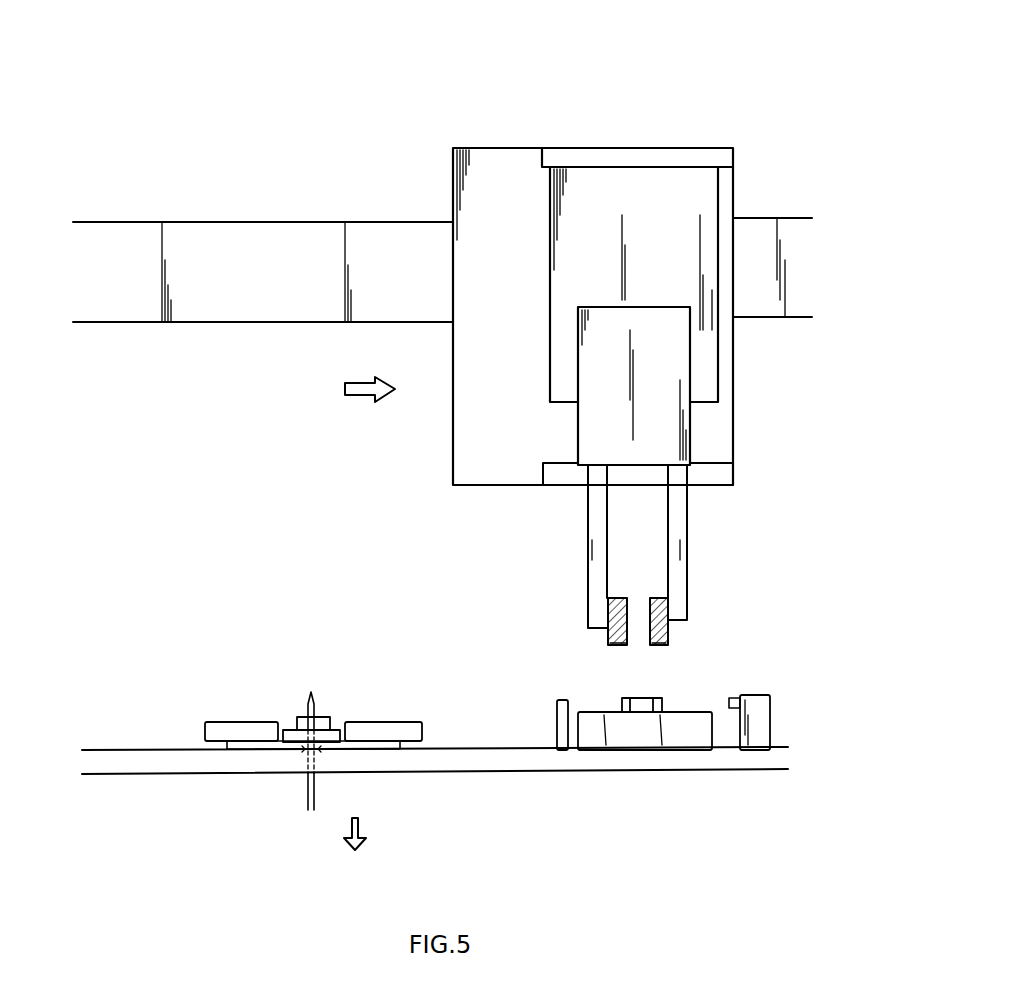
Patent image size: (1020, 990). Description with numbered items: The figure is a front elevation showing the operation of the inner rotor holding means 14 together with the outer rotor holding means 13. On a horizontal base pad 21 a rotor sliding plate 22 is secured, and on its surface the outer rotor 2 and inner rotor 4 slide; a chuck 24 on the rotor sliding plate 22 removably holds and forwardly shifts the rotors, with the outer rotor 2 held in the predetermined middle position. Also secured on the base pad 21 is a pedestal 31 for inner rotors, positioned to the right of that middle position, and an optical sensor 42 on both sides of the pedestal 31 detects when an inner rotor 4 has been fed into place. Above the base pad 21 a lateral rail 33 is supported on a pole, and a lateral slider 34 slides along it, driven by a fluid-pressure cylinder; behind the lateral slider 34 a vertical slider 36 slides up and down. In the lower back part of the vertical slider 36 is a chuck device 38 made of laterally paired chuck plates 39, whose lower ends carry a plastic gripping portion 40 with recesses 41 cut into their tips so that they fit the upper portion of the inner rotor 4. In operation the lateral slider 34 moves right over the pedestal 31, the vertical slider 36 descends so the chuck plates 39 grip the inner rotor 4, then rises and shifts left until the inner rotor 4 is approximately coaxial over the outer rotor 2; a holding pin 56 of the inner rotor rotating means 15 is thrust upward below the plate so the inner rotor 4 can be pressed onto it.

The outer rotor 2 is at (337, 733).
The inner rotor 4 is at (297, 720).
The outer rotor holding means 13 is at (253, 688).
The inner rotor holding means 14 is at (725, 606).
The inner rotor rotating means 15 is at (275, 843).
The base pad 21 is at (147, 775).
The rotor sliding plate 22 is at (375, 743).
The chuck 24 is at (217, 730).
The pedestal 31 is at (675, 730).
The lateral rail 33 is at (282, 235).
The lateral slider 34 is at (507, 173).
The vertical slider 36 is at (643, 238).
The chuck device 38 is at (592, 395).
The chuck plates 39 is at (681, 556).
The gripping portion 40 is at (626, 600).
The recesses 41 is at (651, 646).
The optical sensor 42 is at (557, 721).
The holding pin 56 is at (305, 802).